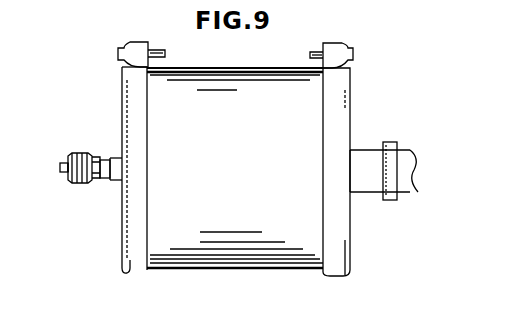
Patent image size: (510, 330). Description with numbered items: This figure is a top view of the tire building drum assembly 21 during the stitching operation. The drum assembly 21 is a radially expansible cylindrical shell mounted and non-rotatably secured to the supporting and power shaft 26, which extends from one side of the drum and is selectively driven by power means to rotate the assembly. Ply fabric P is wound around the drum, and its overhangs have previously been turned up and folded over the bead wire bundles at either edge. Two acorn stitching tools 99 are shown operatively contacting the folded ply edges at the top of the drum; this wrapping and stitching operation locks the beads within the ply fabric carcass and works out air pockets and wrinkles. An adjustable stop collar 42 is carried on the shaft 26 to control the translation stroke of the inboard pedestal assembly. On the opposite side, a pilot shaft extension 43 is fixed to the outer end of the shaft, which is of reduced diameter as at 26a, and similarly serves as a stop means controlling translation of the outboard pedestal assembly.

The drum assembly 21 is at (113, 88).
The ply P is at (255, 73).
The acorn stitching tool 99 is at (133, 44).
The supporting and power shaft 26 is at (403, 157).
The adjustable stop collar 42 is at (390, 196).
The reduced diameter portion of shaft 26a is at (121, 180).
The pilot shaft extension 43 is at (74, 152).